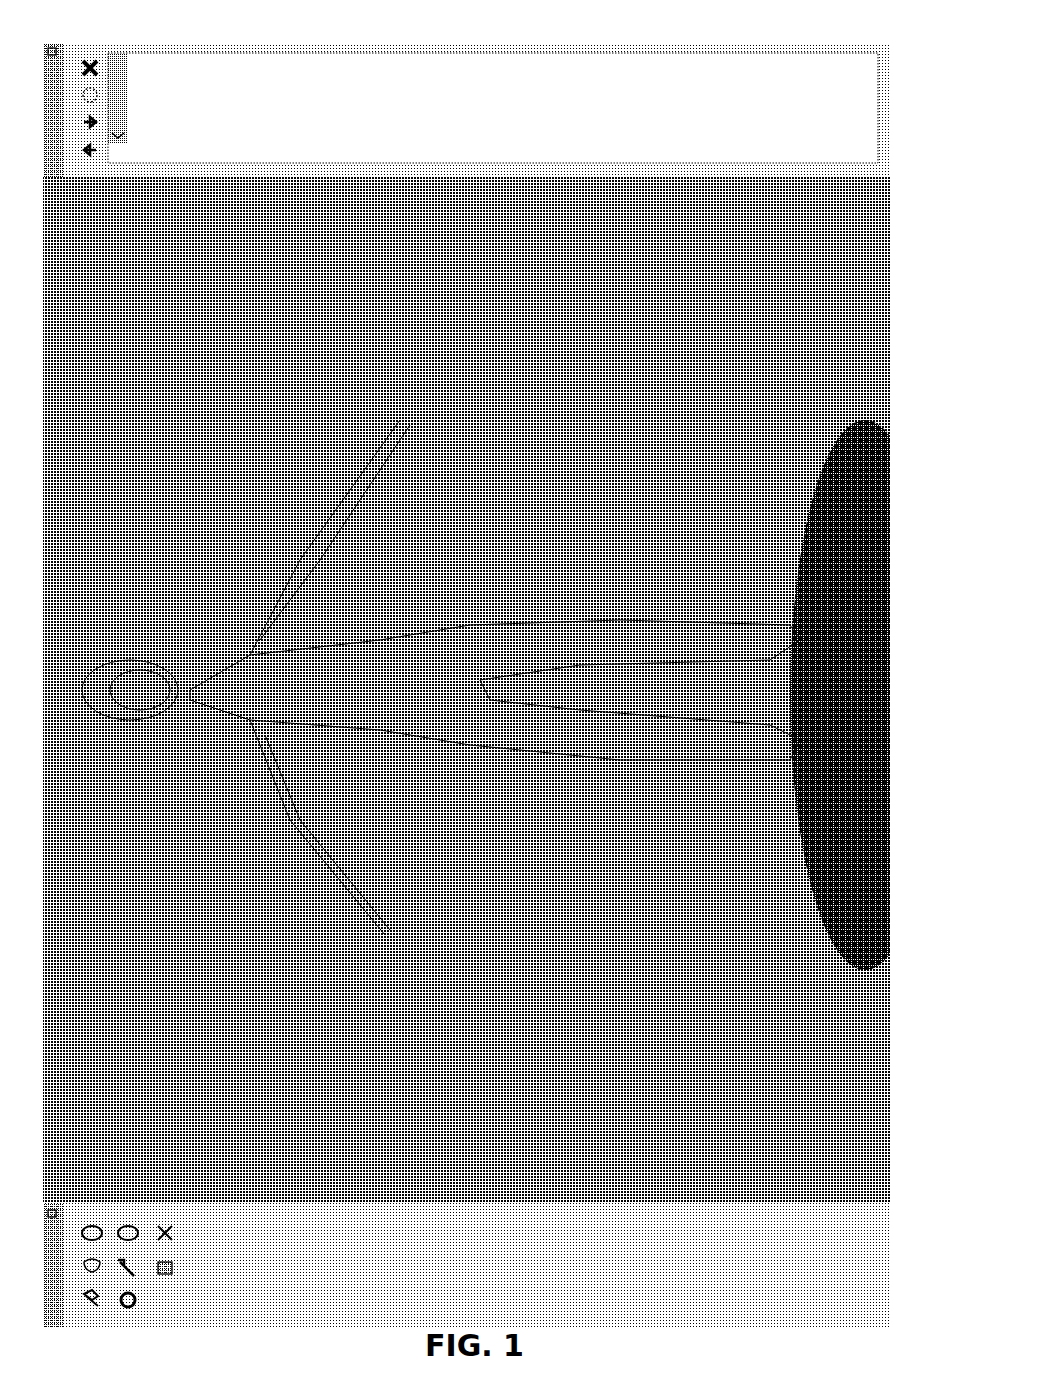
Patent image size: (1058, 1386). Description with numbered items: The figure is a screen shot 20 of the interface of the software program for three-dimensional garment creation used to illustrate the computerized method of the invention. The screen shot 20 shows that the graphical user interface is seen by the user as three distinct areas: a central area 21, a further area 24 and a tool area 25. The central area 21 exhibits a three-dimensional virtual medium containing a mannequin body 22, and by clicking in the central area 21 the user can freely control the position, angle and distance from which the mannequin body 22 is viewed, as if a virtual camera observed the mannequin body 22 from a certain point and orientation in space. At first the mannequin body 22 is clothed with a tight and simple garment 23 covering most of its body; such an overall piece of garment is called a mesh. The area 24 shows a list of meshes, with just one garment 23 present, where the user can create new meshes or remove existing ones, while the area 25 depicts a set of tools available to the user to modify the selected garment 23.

The screen shot 20 is at (503, 663).
The central area 21 is at (491, 690).
The mannequin body 22 is at (107, 686).
The garment 23 is at (377, 670).
The area 24 is at (174, 95).
The area 25 is at (209, 1248).